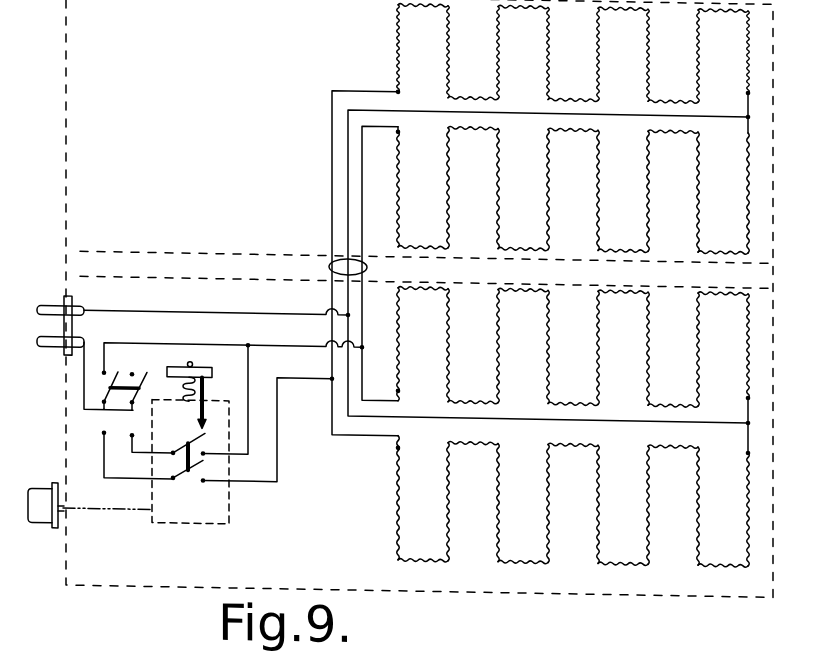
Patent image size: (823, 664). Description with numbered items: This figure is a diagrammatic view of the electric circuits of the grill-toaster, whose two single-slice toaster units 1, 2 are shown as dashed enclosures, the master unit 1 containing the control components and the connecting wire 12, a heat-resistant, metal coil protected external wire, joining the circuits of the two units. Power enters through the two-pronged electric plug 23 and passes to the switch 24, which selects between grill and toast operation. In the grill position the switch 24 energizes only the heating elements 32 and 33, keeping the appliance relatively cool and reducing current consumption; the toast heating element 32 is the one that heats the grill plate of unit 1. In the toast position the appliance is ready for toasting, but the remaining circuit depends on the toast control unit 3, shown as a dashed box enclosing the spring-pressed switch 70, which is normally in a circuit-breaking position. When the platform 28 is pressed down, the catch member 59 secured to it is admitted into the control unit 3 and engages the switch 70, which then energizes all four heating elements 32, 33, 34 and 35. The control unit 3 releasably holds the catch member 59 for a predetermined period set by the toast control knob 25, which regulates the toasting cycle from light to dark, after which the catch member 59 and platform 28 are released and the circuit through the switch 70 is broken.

The master toaster unit 1 is at (77, 290).
The toaster unit 2 is at (77, 240).
The toast control unit 3 is at (218, 499).
The connecting wire 12 is at (329, 266).
The electric plug 23 is at (52, 348).
The switch 24 is at (100, 398).
The toast control knob 25 is at (44, 502).
The platform 28 is at (196, 371).
The toast heating element 32 is at (551, 353).
The heating element 33 is at (551, 211).
The heating element 34 is at (549, 518).
The heating element 35 is at (598, 44).
The catch member 59 is at (204, 391).
The spring-pressed switch 70 is at (186, 475).